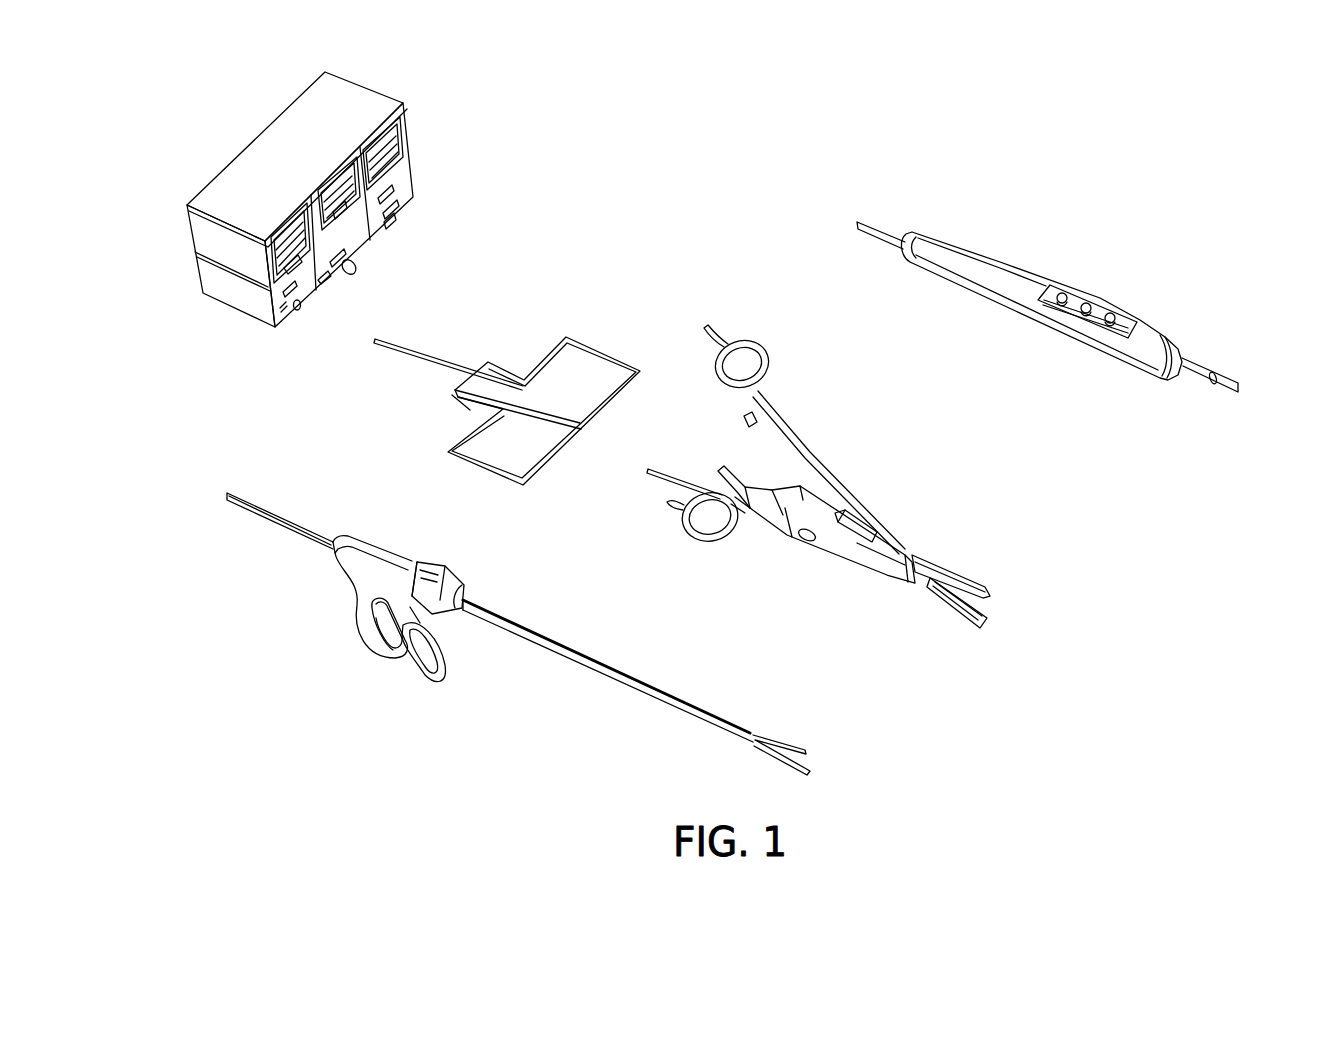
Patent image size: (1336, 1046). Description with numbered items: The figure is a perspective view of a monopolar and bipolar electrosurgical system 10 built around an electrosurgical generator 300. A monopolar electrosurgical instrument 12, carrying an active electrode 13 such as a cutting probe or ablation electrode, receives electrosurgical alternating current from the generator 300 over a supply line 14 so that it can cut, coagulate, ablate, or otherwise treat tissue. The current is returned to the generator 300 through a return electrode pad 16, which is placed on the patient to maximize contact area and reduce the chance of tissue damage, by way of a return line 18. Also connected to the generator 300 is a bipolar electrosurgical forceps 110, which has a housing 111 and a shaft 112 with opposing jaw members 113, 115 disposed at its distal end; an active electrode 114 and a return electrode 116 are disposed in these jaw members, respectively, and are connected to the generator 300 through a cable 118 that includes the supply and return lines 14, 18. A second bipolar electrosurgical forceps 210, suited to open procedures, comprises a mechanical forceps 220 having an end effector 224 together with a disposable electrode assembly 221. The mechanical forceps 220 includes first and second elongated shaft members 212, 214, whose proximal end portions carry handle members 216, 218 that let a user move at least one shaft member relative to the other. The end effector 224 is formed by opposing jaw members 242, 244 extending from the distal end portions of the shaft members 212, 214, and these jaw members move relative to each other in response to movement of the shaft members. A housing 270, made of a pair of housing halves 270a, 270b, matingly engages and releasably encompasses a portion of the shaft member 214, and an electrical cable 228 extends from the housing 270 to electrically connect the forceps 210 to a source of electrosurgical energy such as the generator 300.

The generator 300 is at (225, 142).
The electrosurgical system 10 is at (750, 311).
The monopolar electrosurgical instrument 12 is at (1152, 335).
The active electrode 13 is at (1233, 372).
The supply line 14 is at (876, 221).
The return electrode pad 16 is at (507, 488).
The return line 18 is at (410, 340).
The bipolar electrosurgical forceps 110 is at (563, 639).
The housing 111 is at (370, 540).
The shaft 112 is at (560, 638).
The jaw member 113 is at (793, 740).
The active electrode 114 is at (807, 760).
The jaw member 115 is at (792, 767).
The return electrode 116 is at (810, 773).
The cable 118 is at (301, 536).
The bipolar electrosurgical forceps 210 is at (850, 482).
The first elongated shaft member 212 is at (812, 444).
The second elongated shaft member 214 is at (809, 523).
The handle member 216 is at (753, 343).
The handle member 218 is at (692, 535).
The mechanical forceps 220 is at (956, 558).
The disposable electrode assembly 221 is at (988, 610).
The end effector 224 is at (1000, 603).
The electrical cable 228 is at (667, 468).
The jaw member 242 is at (942, 607).
The jaw member 244 is at (962, 567).
The housing 270 is at (809, 523).
The housing half 270a is at (838, 530).
The housing half 270b is at (862, 498).